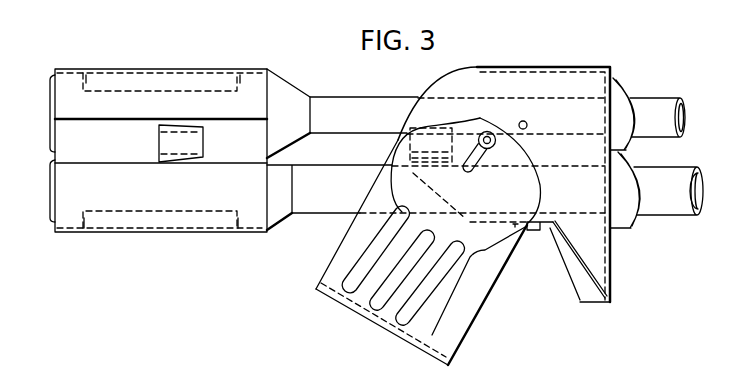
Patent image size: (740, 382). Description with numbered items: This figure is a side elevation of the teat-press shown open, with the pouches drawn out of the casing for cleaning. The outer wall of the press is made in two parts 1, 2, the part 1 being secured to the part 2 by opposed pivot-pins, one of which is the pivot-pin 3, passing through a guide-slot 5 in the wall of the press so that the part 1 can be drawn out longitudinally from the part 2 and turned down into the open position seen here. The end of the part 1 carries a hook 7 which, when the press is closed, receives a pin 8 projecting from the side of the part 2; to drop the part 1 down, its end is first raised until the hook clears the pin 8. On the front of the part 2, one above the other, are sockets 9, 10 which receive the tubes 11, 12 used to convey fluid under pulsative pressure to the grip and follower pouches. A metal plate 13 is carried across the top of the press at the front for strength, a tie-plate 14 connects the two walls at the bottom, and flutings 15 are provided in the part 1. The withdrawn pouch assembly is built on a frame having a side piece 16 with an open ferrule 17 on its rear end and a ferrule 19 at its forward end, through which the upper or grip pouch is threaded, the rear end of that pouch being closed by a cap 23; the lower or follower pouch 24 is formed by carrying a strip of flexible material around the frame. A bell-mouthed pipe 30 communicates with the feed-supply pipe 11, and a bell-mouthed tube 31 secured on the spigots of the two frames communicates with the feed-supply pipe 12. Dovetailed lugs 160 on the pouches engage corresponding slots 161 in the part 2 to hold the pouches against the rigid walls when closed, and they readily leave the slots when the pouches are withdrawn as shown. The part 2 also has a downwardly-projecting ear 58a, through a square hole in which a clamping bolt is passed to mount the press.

The part of the outer wall 1 is at (348, 242).
The part of the outer wall 2 is at (566, 82).
The pivot-pin 3 is at (490, 152).
The guide-slot 5 is at (470, 172).
The hook 7 is at (478, 120).
The pin 8 is at (528, 124).
The socket 9 is at (620, 90).
The socket 10 is at (630, 229).
The tube 11 is at (653, 112).
The tube 12 is at (657, 168).
The metal plate 13 is at (512, 70).
The tie-plate 14 is at (533, 231).
The flutings 15 is at (380, 294).
The side piece 16 is at (173, 212).
The open ferrule 17 is at (84, 88).
The ferrule 19 is at (232, 86).
The cap 23 is at (50, 99).
The follower pouch 24 is at (177, 67).
The bell-mouthed pipe 30 is at (297, 87).
The bell-mouthed tube 31 is at (272, 219).
The ear 58a is at (603, 279).
The dovetailed lug 160 is at (196, 147).
The slot 161 is at (410, 134).